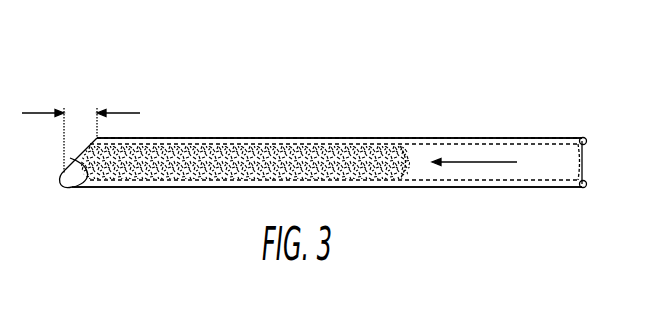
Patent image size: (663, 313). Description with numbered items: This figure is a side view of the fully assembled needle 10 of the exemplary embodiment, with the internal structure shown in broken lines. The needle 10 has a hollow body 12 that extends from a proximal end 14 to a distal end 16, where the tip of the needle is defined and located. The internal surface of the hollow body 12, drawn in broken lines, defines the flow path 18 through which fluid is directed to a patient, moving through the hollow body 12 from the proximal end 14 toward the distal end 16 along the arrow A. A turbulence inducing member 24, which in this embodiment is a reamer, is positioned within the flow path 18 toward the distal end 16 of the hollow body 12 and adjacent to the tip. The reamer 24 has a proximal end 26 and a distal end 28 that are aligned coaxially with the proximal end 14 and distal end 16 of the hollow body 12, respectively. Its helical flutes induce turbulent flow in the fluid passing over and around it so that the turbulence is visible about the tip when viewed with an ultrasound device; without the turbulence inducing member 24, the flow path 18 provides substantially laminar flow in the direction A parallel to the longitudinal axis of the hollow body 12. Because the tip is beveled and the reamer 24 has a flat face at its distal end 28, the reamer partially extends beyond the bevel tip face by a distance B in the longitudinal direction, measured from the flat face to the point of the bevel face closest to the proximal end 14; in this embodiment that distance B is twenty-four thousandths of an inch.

The needle 10 is at (390, 93).
The hollow body 12 is at (493, 135).
The proximal end 14 is at (588, 166).
The distal end 16 is at (63, 174).
The flow path 18 is at (535, 178).
The turbulence inducing member 24 is at (345, 168).
The proximal end of the reamer 26 is at (409, 171).
The distal end of the reamer 28 is at (62, 150).
The arrow A is at (488, 162).
The distance B is at (81, 137).